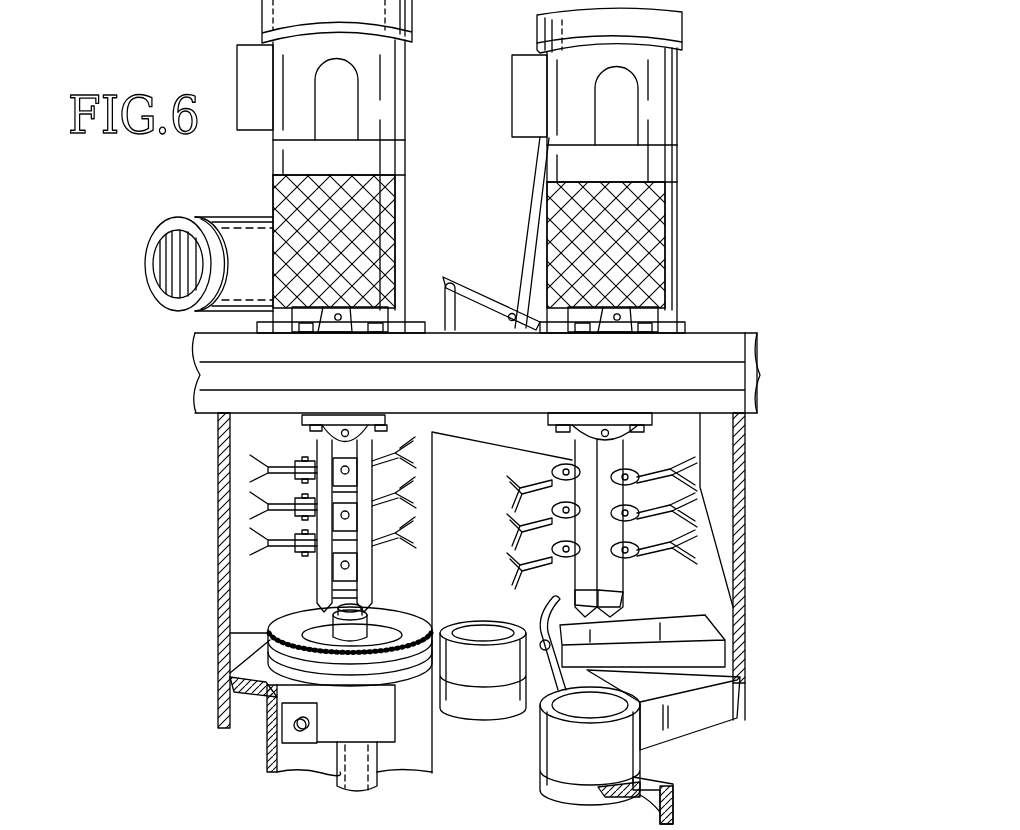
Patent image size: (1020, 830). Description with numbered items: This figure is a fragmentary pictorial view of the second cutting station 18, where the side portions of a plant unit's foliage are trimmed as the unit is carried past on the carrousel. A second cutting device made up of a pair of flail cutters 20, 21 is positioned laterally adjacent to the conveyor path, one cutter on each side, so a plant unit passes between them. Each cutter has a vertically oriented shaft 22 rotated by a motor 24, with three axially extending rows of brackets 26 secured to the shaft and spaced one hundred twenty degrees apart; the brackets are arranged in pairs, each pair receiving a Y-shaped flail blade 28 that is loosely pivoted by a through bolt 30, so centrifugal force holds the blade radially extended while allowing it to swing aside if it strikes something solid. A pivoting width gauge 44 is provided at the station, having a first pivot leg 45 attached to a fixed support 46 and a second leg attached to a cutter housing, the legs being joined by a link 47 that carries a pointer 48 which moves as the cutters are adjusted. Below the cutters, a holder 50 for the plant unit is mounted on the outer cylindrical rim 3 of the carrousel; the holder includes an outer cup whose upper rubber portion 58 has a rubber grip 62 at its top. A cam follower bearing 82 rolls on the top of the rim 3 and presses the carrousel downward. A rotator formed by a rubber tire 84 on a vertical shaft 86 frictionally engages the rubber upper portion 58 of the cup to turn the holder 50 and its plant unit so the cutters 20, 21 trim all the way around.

The outer cylindrical rim 3 is at (667, 783).
The second cutting station 18 is at (795, 442).
The cutter 20 is at (260, 570).
The cutter 21 is at (703, 560).
The vertically oriented shaft 22 is at (323, 452).
The motor 24 is at (680, 97).
The brackets 26 is at (630, 570).
The Y-shaped flail blade 28 is at (260, 505).
The through bolts 30 is at (297, 530).
The pivoting width gauge 44 is at (455, 262).
The first pivot leg 45 is at (437, 320).
The fixed support 46 is at (720, 342).
The link 47 is at (493, 312).
The pointer 48 is at (535, 185).
The holder 50 is at (482, 727).
The upper rubber portion 58 is at (577, 767).
The rubber grip 62 is at (558, 727).
The cam follower bearing 82 is at (543, 623).
The rubber tire 84 is at (272, 633).
The vertical shaft 86 is at (347, 773).